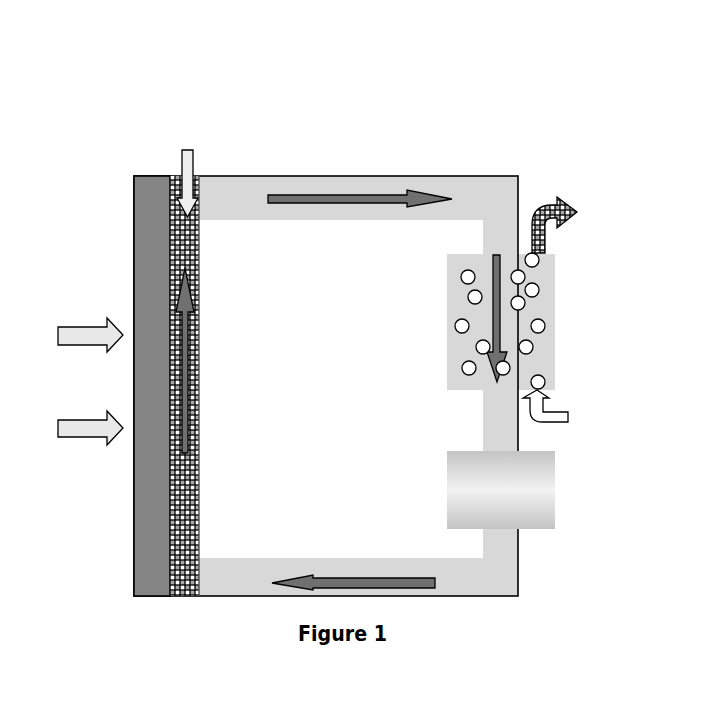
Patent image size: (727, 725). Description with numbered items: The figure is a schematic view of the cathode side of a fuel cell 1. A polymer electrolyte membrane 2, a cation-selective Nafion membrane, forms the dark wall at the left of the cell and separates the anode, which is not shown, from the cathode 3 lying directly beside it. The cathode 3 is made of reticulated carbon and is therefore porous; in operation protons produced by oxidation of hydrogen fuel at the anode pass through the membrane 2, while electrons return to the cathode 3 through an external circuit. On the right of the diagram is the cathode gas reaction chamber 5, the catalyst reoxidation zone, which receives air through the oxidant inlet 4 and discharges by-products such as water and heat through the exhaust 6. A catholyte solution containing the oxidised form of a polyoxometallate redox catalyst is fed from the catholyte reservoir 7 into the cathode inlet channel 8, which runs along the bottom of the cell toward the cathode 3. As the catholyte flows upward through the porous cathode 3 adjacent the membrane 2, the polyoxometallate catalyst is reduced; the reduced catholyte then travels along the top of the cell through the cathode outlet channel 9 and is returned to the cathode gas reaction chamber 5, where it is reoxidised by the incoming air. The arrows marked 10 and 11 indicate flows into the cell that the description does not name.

The fuel cell 1 is at (387, 138).
The polymer electrolyte membrane 2 is at (155, 538).
The cathode 3 is at (191, 580).
The oxidant inlet 4 is at (564, 415).
The cathode gas reaction chamber 5 is at (535, 310).
The exhaust 6 is at (573, 224).
The catholyte reservoir 7 is at (530, 478).
The cathode inlet channel 8 is at (435, 597).
The cathode outlet channel 9 is at (332, 202).
The heat input 10 is at (69, 384).
The liquid feed 11 is at (177, 165).